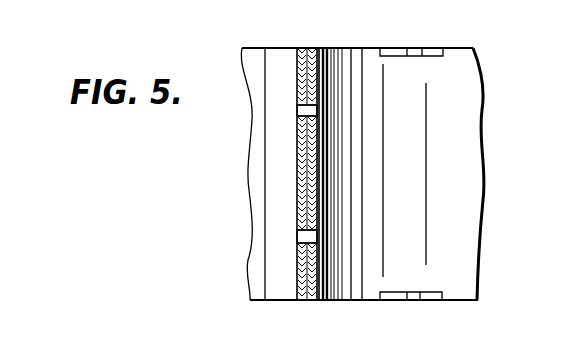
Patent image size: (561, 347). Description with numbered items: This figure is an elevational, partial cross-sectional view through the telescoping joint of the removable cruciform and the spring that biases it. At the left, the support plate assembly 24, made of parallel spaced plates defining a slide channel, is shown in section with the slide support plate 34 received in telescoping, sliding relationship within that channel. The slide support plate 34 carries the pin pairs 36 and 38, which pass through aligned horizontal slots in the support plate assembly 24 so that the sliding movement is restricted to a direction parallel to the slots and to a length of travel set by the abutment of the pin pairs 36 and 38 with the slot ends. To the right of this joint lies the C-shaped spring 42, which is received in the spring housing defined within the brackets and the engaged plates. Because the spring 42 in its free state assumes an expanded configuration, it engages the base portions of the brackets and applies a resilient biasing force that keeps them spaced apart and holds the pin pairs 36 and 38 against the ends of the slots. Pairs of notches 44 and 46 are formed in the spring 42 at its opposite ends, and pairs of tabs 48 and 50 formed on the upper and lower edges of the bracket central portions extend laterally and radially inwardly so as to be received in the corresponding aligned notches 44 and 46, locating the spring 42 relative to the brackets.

The support plate assembly 24 is at (315, 48).
The slide support plate 34 is at (305, 301).
The pin pair 36 is at (300, 110).
The pin pair 38 is at (301, 236).
The C-shaped spring 42 is at (320, 48).
The notches 44 is at (437, 50).
The notches 46 is at (438, 301).
The tabs 48 is at (413, 48).
The tabs 50 is at (413, 301).